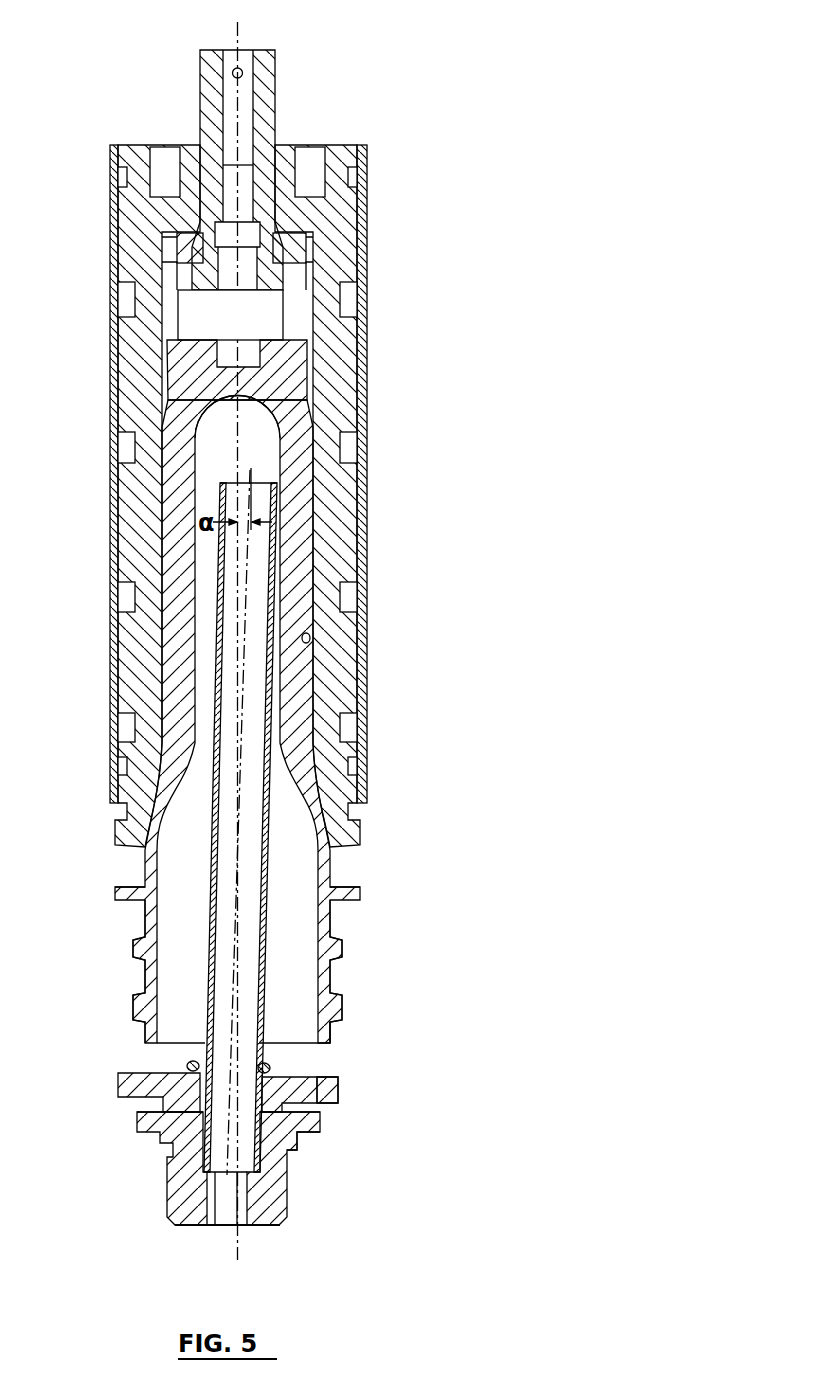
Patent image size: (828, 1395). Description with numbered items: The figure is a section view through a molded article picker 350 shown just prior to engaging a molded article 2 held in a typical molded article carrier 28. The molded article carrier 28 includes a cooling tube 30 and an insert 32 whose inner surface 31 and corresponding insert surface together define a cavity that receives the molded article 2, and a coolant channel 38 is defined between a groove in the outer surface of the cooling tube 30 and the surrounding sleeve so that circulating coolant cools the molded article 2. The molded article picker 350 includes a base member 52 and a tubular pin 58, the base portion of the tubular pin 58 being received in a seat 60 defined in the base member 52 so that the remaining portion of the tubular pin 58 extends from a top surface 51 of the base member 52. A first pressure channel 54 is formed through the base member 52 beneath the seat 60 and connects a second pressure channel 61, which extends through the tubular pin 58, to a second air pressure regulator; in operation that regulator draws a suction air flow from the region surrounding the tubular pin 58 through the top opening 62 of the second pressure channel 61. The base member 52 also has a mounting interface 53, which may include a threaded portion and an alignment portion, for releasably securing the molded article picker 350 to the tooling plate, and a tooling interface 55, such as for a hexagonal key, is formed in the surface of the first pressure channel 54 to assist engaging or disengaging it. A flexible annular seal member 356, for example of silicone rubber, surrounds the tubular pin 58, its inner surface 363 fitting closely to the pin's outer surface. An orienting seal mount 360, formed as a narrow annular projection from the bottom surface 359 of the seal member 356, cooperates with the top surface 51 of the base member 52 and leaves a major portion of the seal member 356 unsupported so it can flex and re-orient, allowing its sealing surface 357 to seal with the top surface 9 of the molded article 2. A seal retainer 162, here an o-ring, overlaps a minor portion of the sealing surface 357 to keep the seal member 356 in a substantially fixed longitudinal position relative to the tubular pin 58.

The molded article carrier 28 is at (403, 153).
The cooling tube 30 is at (343, 349).
The insert 32 is at (307, 372).
The molded article 2 is at (303, 549).
The top opening 62 is at (218, 467).
The inner surface 31 is at (310, 640).
The coolant channel 38 is at (357, 728).
The second pressure channel 61 is at (250, 866).
The tubular pin 58 is at (264, 938).
The inner surface 363 is at (250, 1068).
The top surface 9 is at (323, 1050).
The top surface 51 is at (316, 1071).
The sealing surface 357 is at (330, 1076).
The seal member 356 is at (345, 1088).
The bottom surface 359 is at (318, 1122).
The base member 52 is at (287, 1136).
The mounting interface 53 is at (130, 1113).
The first pressure channel 54 is at (227, 1223).
The tooling interface 55 is at (247, 1223).
The seat 60 is at (244, 1210).
The molded article picker 350 is at (349, 1225).
The seal retainer 162 is at (186, 1065).
The orienting seal mount 360 is at (118, 1086).